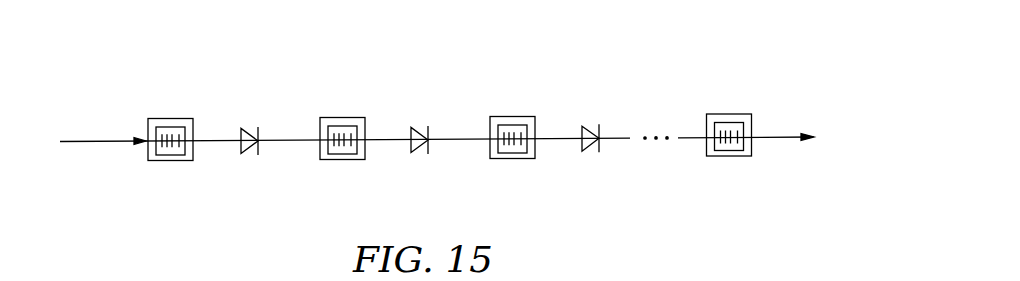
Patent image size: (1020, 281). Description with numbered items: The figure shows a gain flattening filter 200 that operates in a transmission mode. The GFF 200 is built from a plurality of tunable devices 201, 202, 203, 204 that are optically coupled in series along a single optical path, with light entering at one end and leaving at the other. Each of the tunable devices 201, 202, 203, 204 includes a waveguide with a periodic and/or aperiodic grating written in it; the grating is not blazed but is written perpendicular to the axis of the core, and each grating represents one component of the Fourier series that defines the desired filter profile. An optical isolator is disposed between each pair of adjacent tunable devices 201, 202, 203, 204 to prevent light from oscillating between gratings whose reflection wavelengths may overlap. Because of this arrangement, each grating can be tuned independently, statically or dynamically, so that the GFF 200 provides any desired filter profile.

The gain flattening filter 200 is at (486, 70).
The tunable device 201 is at (168, 114).
The tunable device 202 is at (340, 113).
The tunable device 203 is at (510, 112).
The tunable device 204 is at (727, 108).